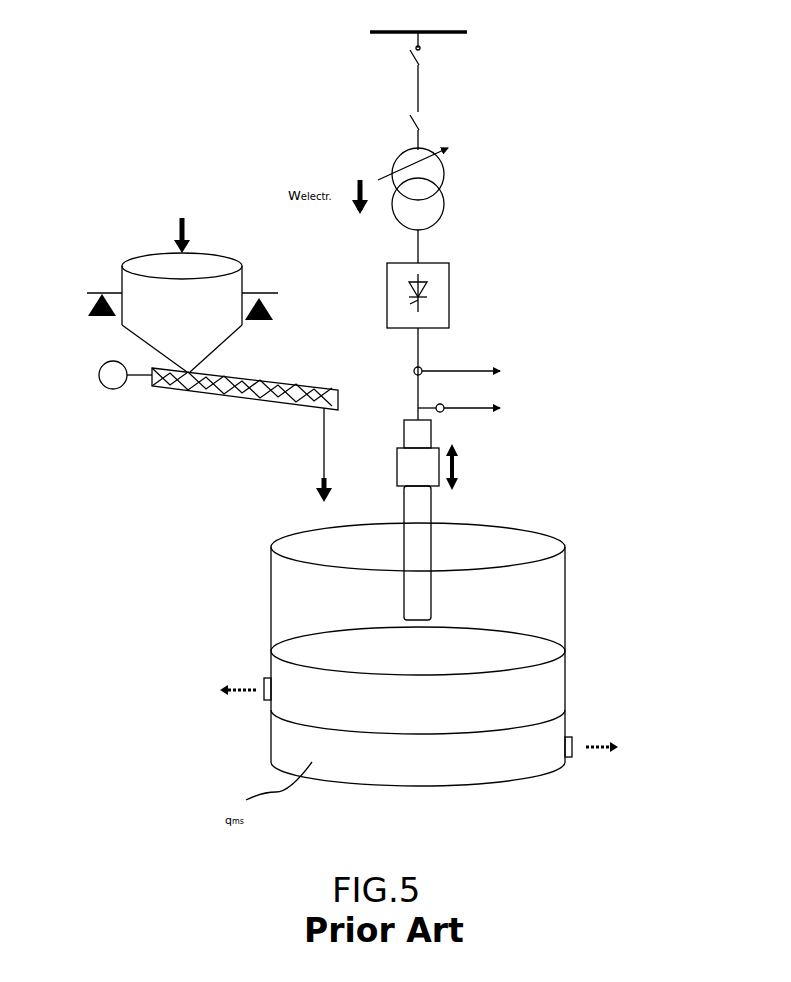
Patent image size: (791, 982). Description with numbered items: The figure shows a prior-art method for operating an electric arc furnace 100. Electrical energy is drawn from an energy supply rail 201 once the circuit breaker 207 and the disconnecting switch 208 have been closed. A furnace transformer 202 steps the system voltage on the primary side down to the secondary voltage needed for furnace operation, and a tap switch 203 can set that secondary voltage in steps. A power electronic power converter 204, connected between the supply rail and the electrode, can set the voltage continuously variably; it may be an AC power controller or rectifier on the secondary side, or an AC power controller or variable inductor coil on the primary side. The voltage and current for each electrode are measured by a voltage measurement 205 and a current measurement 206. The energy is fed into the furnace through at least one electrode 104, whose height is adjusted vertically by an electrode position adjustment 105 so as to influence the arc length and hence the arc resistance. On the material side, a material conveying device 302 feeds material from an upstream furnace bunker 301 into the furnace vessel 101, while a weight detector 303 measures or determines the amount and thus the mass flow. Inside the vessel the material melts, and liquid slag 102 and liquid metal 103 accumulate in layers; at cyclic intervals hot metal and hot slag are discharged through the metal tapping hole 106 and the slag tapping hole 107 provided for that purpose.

The electric arc furnace 100 is at (166, 645).
The furnace vessel 101 is at (292, 580).
The liquid slag 102 is at (418, 670).
The liquid metal 103 is at (418, 739).
The electrode 104 is at (418, 510).
The electrode position adjustment 105 is at (462, 462).
The metal tapping hole 106 is at (578, 760).
The slag tapping hole 107 is at (262, 702).
The energy supply rail 201 is at (447, 40).
The furnace transformer 202 is at (392, 224).
The tap switch 203 is at (456, 152).
The power electronic power converter 204 is at (384, 282).
The voltage measurement 205 is at (459, 397).
The current measurement 206 is at (457, 360).
The circuit breaker 207 is at (410, 56).
The disconnecting switch 208 is at (410, 122).
The furnace bunker 301 is at (140, 264).
The material conveying device 302 is at (216, 400).
The weight detector 303 is at (98, 318).